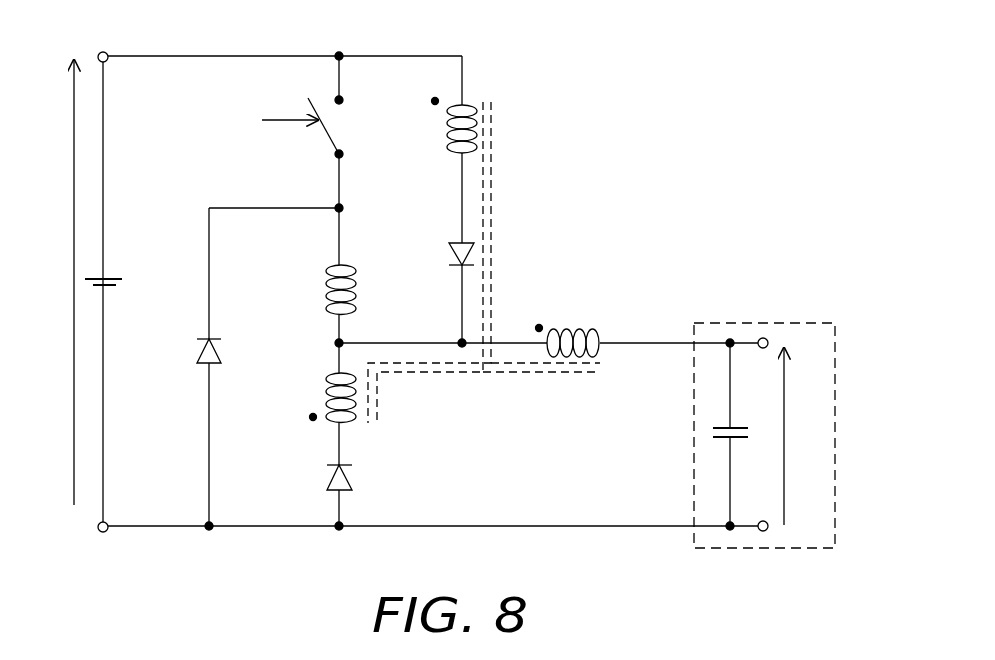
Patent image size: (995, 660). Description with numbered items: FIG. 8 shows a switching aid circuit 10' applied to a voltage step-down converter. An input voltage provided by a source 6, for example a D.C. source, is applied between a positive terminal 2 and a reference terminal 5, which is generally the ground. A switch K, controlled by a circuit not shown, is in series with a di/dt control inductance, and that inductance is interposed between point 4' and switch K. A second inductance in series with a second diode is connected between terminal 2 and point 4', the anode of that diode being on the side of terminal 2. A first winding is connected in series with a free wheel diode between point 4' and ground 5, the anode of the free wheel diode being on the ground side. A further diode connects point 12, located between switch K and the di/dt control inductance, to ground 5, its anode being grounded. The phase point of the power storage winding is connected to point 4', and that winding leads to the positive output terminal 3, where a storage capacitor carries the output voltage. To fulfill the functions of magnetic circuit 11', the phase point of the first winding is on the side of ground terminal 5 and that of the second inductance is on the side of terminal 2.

The positive terminal 2 is at (107, 61).
The reference terminal 5 is at (106, 531).
The source 6 is at (108, 276).
The point 12 is at (343, 206).
The point 4' is at (308, 328).
The magnetic circuit 11' is at (487, 262).
The positive output terminal 3 is at (760, 338).
The switching aid circuit 10' is at (439, 308).